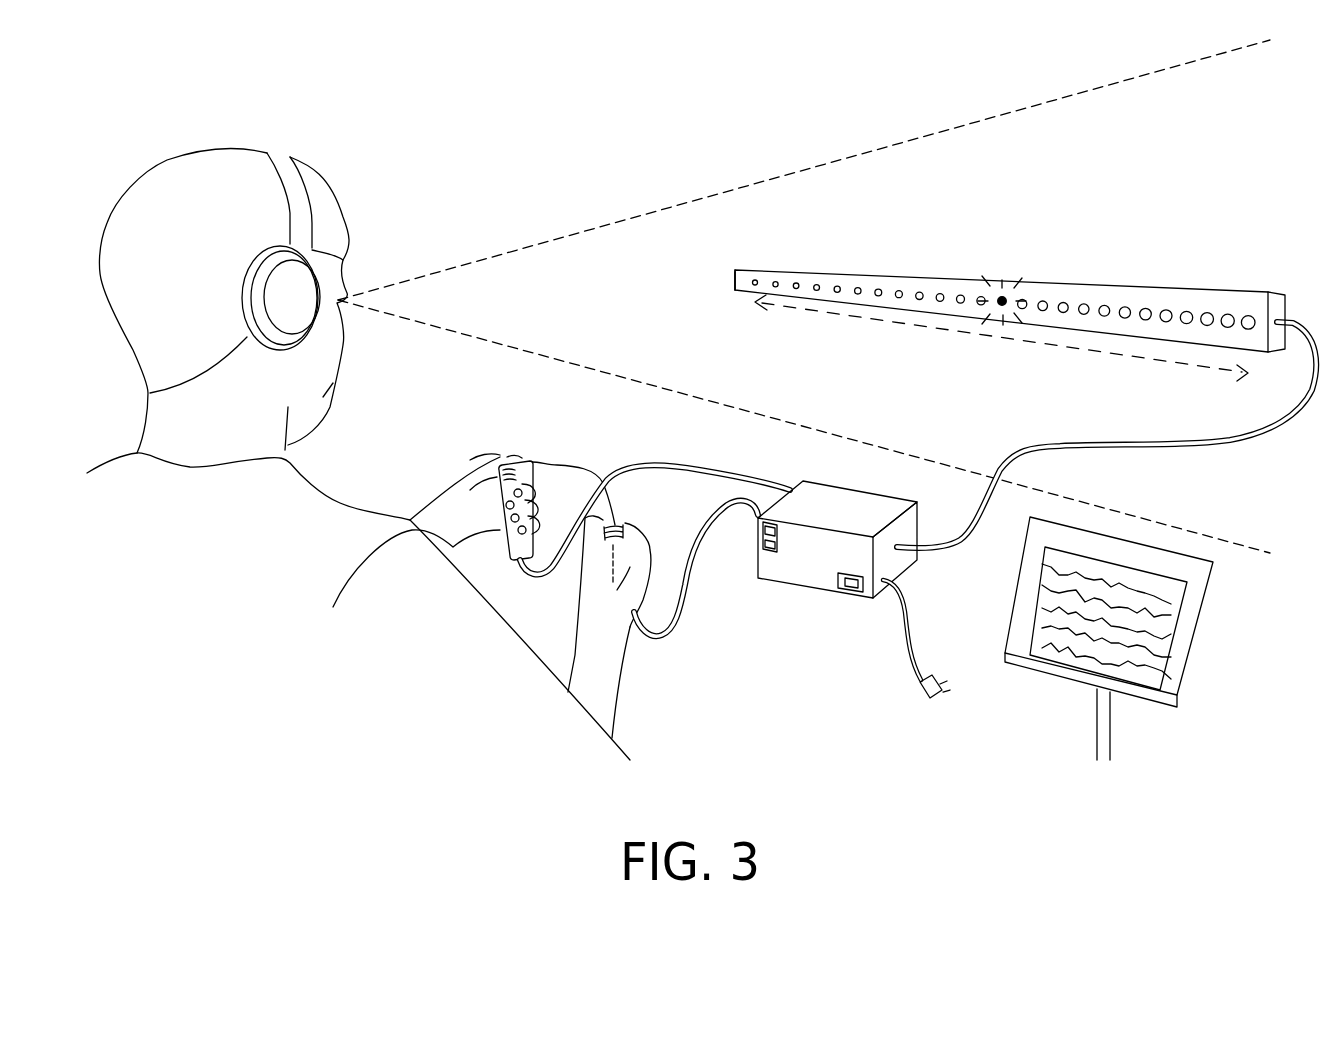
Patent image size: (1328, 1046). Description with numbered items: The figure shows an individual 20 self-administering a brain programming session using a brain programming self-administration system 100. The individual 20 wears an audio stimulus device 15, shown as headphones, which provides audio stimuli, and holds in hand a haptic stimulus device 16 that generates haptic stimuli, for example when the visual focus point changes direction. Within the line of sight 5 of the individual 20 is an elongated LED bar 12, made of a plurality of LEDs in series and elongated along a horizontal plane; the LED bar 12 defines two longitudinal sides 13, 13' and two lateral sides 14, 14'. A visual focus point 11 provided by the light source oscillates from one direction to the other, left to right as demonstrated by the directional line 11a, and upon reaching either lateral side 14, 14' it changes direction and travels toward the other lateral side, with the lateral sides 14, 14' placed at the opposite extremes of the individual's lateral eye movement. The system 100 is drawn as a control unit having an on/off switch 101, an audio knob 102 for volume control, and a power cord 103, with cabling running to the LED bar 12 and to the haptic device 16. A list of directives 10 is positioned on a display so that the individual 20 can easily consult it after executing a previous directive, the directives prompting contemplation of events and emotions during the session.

The individual 20 is at (170, 157).
The audio stimulus device 15 is at (297, 307).
The line of sight 5 is at (547, 263).
The haptic stimulus device 16 is at (557, 465).
The longitudinal side 13 is at (1001, 291).
The longitudinal side 13' is at (716, 302).
The lateral side 14 is at (729, 206).
The lateral side 14' is at (1273, 236).
The elongated LED bar 12 is at (1167, 313).
The visual focus point 11 is at (1003, 295).
The directional line 11a is at (1013, 305).
The brain programming self-administration system 100 is at (812, 562).
The on/off switch 101 is at (756, 551).
The audio knob 102 is at (850, 591).
The power cord 103 is at (913, 687).
The list of directives 10 is at (1153, 630).